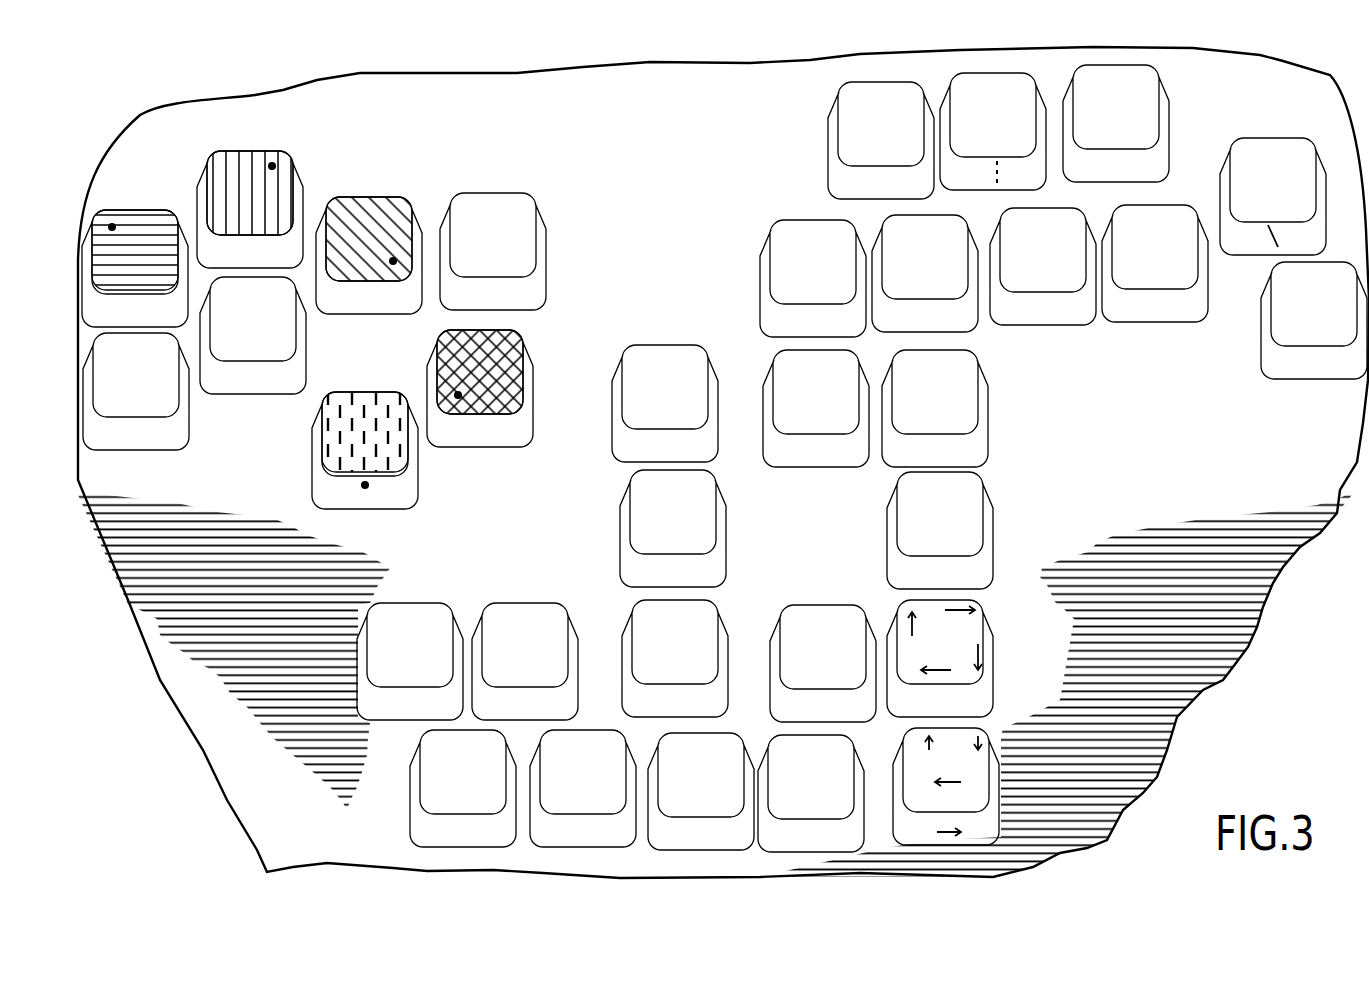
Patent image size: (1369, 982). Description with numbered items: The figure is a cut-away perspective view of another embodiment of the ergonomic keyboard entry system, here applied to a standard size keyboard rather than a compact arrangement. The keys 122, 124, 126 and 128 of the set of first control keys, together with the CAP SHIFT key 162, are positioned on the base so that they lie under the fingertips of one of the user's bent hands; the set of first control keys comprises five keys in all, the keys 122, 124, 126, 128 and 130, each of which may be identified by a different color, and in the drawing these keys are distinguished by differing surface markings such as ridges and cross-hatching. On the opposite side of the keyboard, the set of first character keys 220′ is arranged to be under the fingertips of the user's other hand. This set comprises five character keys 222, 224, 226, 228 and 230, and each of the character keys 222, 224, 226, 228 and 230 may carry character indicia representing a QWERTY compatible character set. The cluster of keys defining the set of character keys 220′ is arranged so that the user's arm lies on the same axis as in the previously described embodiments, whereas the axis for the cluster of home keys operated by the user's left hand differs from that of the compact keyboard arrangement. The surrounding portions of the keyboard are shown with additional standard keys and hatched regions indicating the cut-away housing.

The set of first character keys 220′ is at (1202, 144).
The key 122 is at (136, 212).
The key 124 is at (247, 147).
The key 126 is at (360, 197).
The key 128 is at (525, 354).
The key 130 is at (405, 470).
The CAP SHIFT key 162 is at (521, 604).
The character key 222 is at (1263, 323).
The character key 224 is at (1162, 320).
The character key 226 is at (1048, 320).
The character key 228 is at (990, 398).
The character key 230 is at (819, 607).